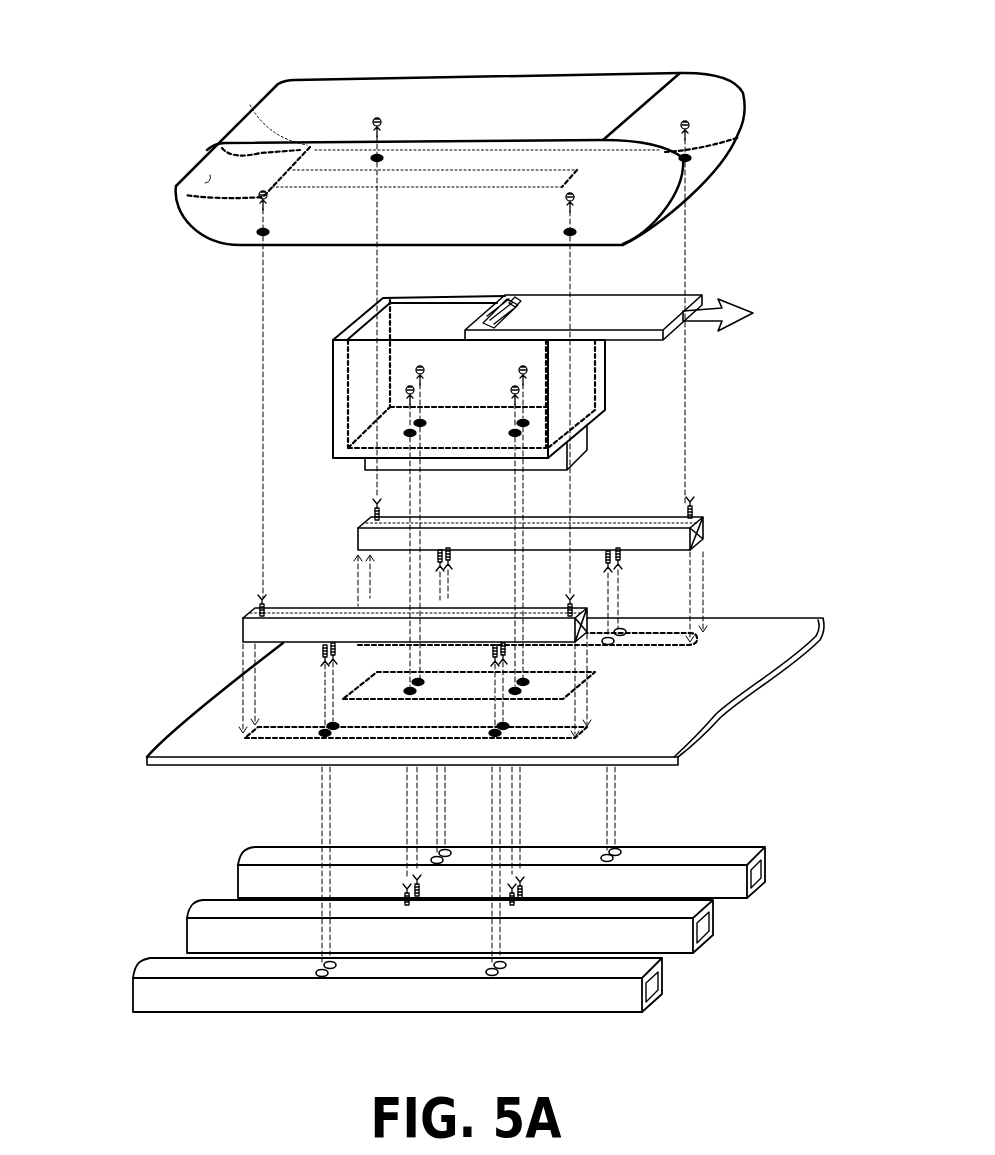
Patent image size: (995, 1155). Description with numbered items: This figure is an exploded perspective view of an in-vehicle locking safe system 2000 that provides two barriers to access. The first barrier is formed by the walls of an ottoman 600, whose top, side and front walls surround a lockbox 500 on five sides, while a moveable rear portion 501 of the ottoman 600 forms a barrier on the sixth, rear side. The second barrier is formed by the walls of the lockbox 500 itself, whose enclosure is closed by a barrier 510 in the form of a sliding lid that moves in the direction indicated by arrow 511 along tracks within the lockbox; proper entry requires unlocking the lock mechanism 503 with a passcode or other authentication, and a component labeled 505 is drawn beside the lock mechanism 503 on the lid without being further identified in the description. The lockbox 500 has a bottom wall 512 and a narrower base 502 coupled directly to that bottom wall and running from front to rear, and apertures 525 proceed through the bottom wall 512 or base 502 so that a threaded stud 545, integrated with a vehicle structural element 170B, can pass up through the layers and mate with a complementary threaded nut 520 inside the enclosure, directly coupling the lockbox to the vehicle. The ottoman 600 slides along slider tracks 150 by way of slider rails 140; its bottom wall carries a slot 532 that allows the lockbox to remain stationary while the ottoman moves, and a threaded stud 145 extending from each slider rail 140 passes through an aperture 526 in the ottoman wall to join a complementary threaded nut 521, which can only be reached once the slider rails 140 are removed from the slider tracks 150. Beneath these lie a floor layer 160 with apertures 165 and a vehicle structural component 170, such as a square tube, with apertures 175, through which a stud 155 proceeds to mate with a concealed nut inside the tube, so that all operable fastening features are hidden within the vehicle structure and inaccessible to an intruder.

The in-vehicle locking safe system 2000 is at (100, 101).
The ottoman 600 is at (727, 88).
The moveable rear portion 501 is at (207, 181).
The slot 532 is at (312, 195).
The threaded nut 521 is at (712, 128).
The aperture 526 is at (695, 158).
The lock mechanism 503 is at (494, 312).
The connector port 505 is at (510, 301).
The barrier 510 is at (600, 302).
The arrow 511 is at (743, 318).
The nut 520 is at (405, 392).
The aperture 525 is at (405, 420).
The lockbox 500 is at (572, 417).
The base 502 is at (587, 445).
The bottom wall 512 is at (443, 447).
The stud 145 is at (700, 503).
The slider rail 140 is at (255, 612).
The slider track 150 is at (243, 630).
The floor layer 160 is at (780, 618).
The stud 155 is at (323, 650).
The aperture 165 is at (320, 733).
The stud 545 is at (405, 895).
The vehicle structural element 170B is at (220, 918).
The vehicle structural component 170 is at (152, 970).
The aperture 175 is at (322, 972).